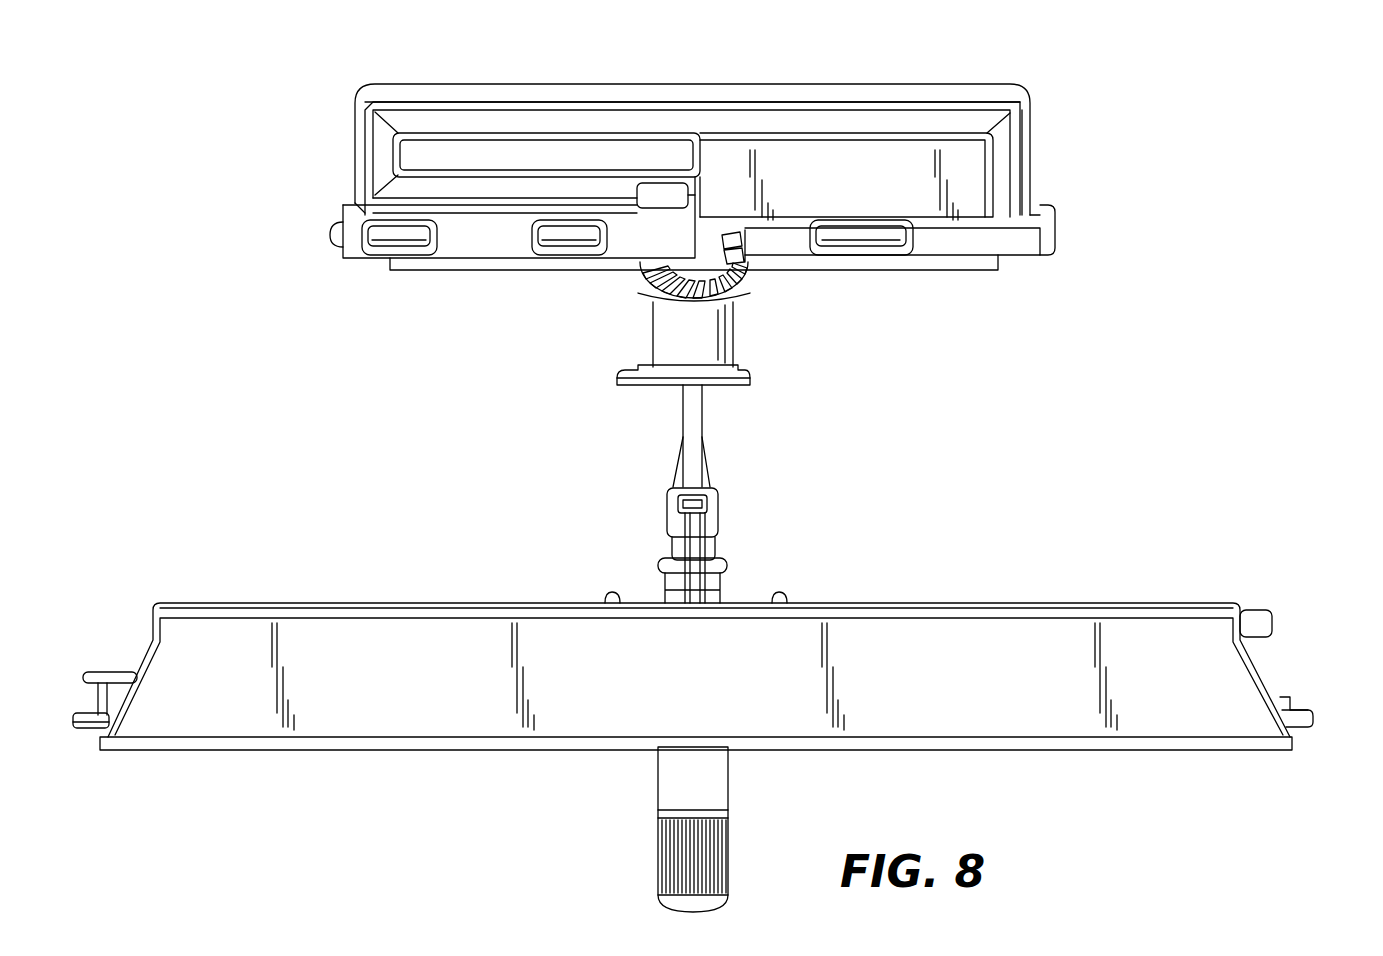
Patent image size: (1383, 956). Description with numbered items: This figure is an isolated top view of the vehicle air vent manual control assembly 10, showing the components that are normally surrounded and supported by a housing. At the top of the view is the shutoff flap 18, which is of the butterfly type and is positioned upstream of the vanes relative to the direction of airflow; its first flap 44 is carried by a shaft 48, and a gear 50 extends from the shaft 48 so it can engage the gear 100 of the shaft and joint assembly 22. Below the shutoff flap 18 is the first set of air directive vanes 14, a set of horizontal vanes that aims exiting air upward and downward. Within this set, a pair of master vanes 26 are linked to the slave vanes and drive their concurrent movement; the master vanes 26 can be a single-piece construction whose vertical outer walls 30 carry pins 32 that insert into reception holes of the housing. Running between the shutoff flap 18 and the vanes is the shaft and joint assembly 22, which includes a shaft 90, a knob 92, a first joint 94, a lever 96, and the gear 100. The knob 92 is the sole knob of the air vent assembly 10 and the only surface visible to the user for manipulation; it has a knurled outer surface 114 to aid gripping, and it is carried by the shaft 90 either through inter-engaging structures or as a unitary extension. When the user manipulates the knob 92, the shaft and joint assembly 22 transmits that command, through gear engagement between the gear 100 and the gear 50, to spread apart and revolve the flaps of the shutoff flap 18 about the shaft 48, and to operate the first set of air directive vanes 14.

The vehicle air vent manual control assembly 10 is at (497, 803).
The first set of air directive vanes 14 is at (946, 758).
The shutoff flap 18 is at (822, 80).
The shaft and joint assembly 22 is at (645, 813).
The master vanes 26 is at (240, 745).
The vertical outer walls 30 is at (137, 672).
The pins 32 is at (74, 718).
The first flap 44 is at (895, 160).
The shaft 48 is at (490, 238).
The gear 50 is at (746, 252).
The shaft 90 is at (707, 763).
The knob 92 is at (729, 857).
The first joint 94 is at (727, 568).
The lever 96 is at (703, 417).
The gear 100 is at (640, 298).
The knurled outer surface 114 is at (688, 866).